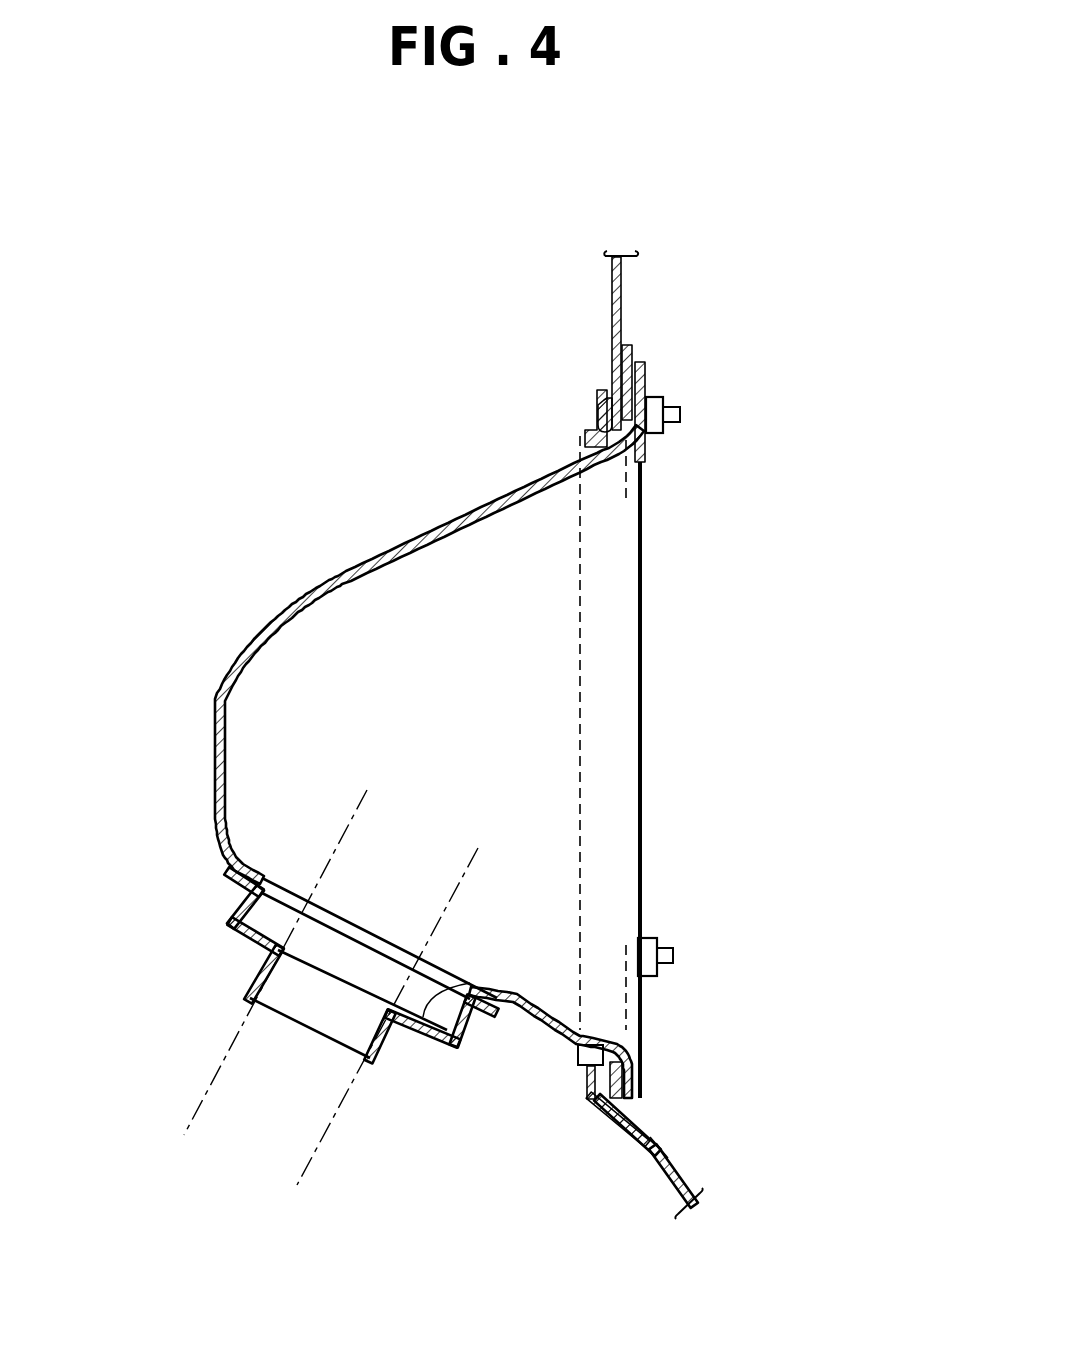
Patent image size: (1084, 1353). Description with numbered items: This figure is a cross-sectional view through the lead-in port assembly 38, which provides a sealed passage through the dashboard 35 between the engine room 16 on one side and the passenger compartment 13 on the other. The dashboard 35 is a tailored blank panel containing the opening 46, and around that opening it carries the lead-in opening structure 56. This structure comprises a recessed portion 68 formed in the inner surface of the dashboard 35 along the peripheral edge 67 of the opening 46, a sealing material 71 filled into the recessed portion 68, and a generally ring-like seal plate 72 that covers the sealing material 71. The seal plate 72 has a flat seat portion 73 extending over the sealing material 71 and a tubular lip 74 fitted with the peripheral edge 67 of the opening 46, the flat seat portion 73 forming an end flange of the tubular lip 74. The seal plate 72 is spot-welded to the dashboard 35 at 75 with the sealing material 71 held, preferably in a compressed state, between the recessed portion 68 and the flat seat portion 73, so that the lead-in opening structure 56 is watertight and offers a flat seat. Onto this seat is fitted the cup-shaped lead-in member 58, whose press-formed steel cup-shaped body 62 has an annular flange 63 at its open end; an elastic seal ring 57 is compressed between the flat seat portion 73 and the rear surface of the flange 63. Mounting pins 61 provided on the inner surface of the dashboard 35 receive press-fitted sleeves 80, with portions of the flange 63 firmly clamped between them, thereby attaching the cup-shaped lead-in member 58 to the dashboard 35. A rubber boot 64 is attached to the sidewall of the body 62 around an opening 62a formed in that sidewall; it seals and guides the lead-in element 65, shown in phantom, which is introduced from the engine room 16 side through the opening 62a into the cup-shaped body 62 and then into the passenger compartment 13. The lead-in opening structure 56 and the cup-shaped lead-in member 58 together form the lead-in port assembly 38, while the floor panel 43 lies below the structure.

The passenger compartment 13 is at (894, 595).
The engine room 16 is at (104, 601).
The dashboard 35 is at (600, 274).
The lead-in port assembly 38 is at (404, 392).
The floor panel 43 is at (684, 1180).
The opening 46 is at (590, 430).
The lead-in opening structure 56 is at (624, 335).
The seal ring 57 is at (648, 364).
The cup-shaped lead-in member 58 is at (715, 656).
The mounting pins 61 is at (682, 413).
The cup-shaped body 62 is at (342, 572).
The opening 62a is at (421, 1015).
The flange 63 is at (644, 562).
The rubber boot 64 is at (235, 916).
The lead-in element 65 is at (205, 1078).
The peripheral edge 67 is at (600, 398).
The recessed portion 68 is at (615, 392).
The sealing material 71 is at (588, 1090).
The seal plate 72 is at (645, 1117).
The flat seat portion 73 is at (655, 1086).
The tubular lip 74 is at (578, 1050).
The spot weld 75 is at (641, 1143).
The sleeves 80 is at (665, 400).